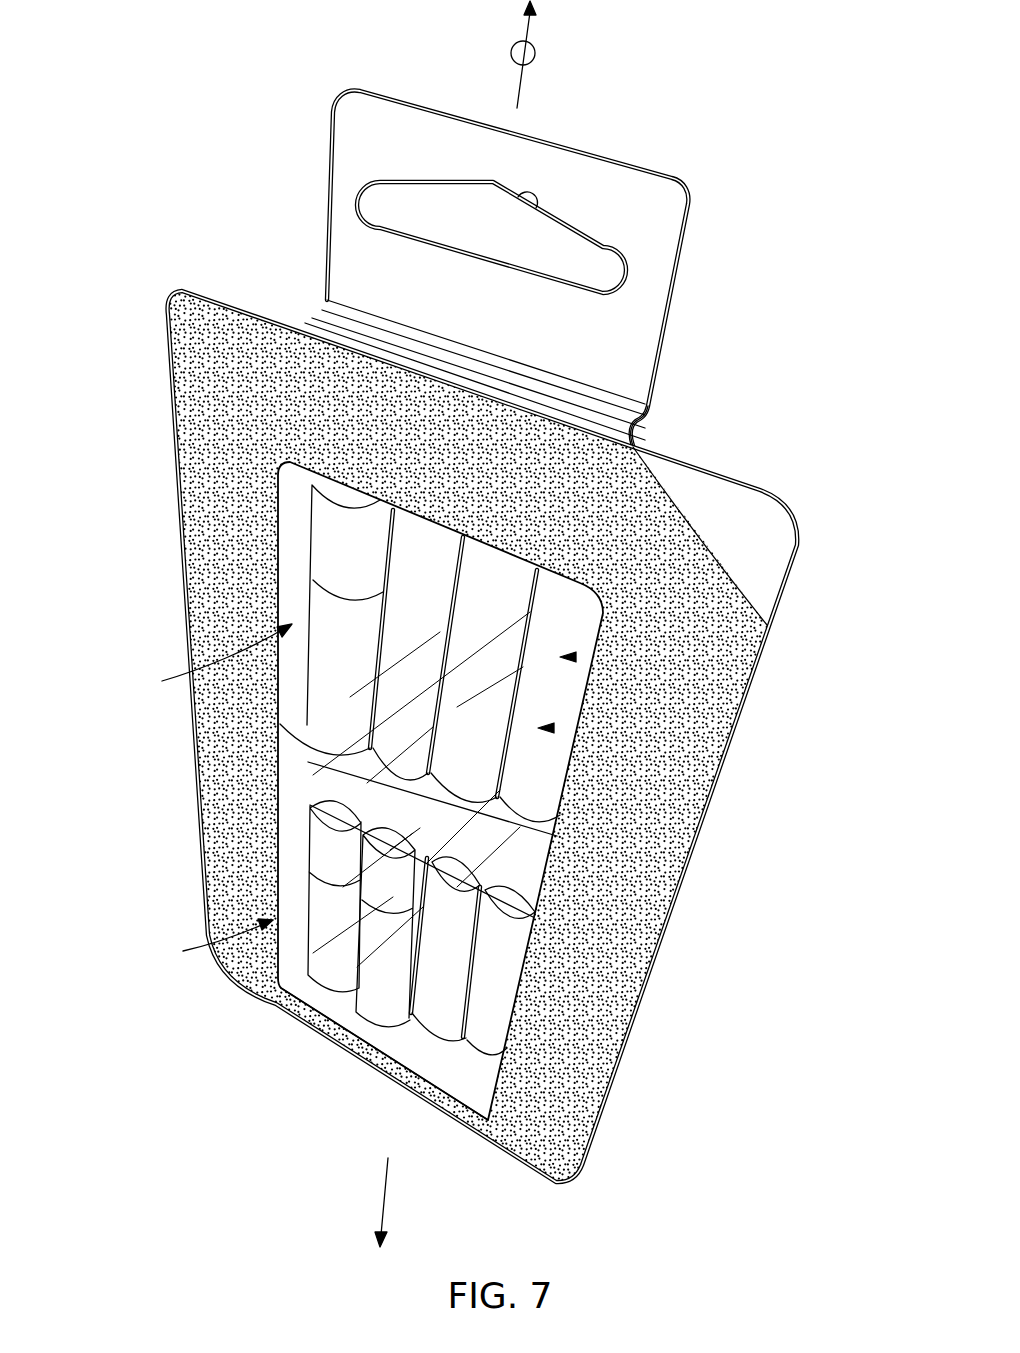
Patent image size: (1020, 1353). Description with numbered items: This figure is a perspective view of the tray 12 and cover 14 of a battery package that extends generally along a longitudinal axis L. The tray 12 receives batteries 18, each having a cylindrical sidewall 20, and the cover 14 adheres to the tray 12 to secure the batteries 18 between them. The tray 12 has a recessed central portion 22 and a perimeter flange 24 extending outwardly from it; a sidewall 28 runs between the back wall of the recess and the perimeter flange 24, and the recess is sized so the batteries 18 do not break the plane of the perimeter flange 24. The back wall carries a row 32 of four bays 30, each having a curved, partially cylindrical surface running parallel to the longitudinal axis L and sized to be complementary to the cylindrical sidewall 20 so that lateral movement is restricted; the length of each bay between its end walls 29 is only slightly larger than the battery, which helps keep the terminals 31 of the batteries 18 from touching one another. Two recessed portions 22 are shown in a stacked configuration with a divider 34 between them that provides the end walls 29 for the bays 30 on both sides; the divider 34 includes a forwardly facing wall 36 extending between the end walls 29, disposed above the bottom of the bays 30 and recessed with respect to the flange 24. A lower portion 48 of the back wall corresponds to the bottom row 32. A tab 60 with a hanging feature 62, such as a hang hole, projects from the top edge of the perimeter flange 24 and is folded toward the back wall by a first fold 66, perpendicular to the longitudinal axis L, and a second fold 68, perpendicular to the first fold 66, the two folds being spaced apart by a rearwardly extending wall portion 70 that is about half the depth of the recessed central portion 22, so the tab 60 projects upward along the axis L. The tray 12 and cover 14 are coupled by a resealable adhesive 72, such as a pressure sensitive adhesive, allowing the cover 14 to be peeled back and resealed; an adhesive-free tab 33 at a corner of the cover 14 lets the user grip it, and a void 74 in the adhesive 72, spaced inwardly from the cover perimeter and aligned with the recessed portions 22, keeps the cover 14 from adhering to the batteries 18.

The longitudinal axis L is at (536, 50).
The tray 12 is at (472, 632).
The cover 14 is at (474, 736).
The batteries 18 is at (322, 662).
The cylindrical sidewall 20 is at (330, 552).
The recessed central portion 22 is at (574, 660).
The perimeter flange 24 is at (764, 584).
The sidewall 28 is at (293, 533).
The end walls 29 is at (520, 900).
The bays 30 is at (578, 595).
The terminals 31 is at (320, 480).
The row 32 is at (207, 794).
The tab 33 is at (733, 572).
The divider 34 is at (313, 822).
The forwardly facing wall 36 is at (540, 950).
The lower portion 48 is at (493, 1023).
The tab 60 is at (622, 180).
The hanging feature 62 is at (517, 190).
The first fold 66 is at (633, 441).
The second fold 68 is at (654, 410).
The rearwardly extending wall portion 70 is at (313, 320).
The resealable adhesive 72 is at (667, 857).
The void 74 is at (552, 732).